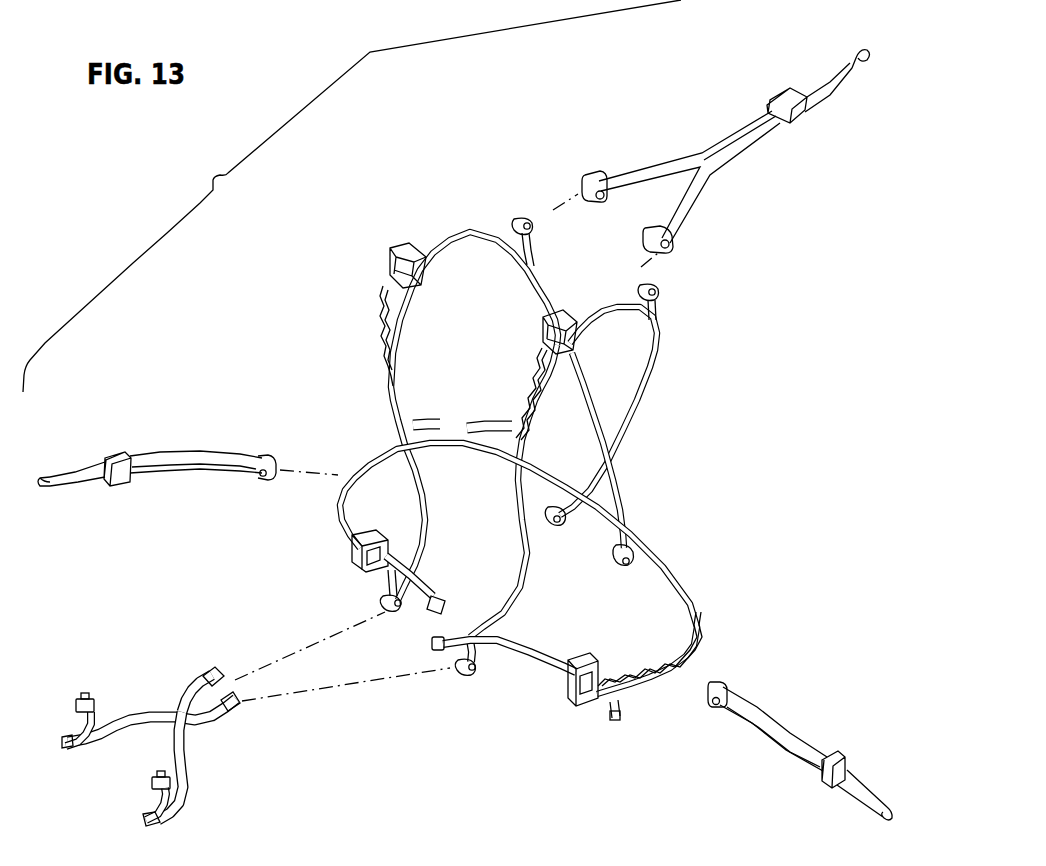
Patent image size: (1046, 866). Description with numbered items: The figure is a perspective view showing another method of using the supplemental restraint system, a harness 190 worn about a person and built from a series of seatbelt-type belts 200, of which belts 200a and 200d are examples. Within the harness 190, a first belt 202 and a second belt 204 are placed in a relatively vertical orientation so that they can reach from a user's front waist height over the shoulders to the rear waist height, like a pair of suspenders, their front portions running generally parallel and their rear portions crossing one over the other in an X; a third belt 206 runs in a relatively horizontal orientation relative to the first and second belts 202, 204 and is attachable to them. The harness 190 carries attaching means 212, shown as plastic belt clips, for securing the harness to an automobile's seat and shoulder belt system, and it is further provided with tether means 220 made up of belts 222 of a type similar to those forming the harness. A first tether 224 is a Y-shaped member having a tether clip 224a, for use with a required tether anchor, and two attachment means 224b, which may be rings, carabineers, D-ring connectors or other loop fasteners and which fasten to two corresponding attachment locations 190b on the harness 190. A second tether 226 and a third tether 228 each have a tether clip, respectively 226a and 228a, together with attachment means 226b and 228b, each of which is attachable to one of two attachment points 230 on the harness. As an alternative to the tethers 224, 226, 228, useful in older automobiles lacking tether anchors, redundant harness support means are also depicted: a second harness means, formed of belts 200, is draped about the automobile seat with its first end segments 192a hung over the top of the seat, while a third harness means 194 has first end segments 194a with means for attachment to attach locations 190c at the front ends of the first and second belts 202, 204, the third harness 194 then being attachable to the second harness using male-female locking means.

The harness 190 is at (426, 247).
The attachment locations 190b is at (536, 228).
The attach locations 190c is at (452, 670).
The first end segments 192a is at (408, 859).
The third harness means 194 is at (192, 740).
The first end segments 194a is at (240, 682).
The series of belts 200 is at (546, 442).
The belt 200a is at (638, 386).
The belt 200d is at (530, 660).
The first belt 202 is at (408, 386).
The second belt 204 is at (518, 462).
The third belt 206 is at (478, 470).
The attaching means 212 is at (393, 250).
The tether means 220 is at (754, 110).
The belts 222 is at (700, 138).
The first tether 224 is at (470, 417).
The tether clip 224a is at (842, 58).
The attachment means 224b is at (585, 176).
The second tether 226 is at (162, 515).
The tether clip 226a is at (60, 490).
The attachment means 226b is at (270, 482).
The third tether 228 is at (800, 747).
The tether clip 228a is at (866, 813).
The attachment means 228b is at (718, 712).
The attachment points 230 is at (344, 476).